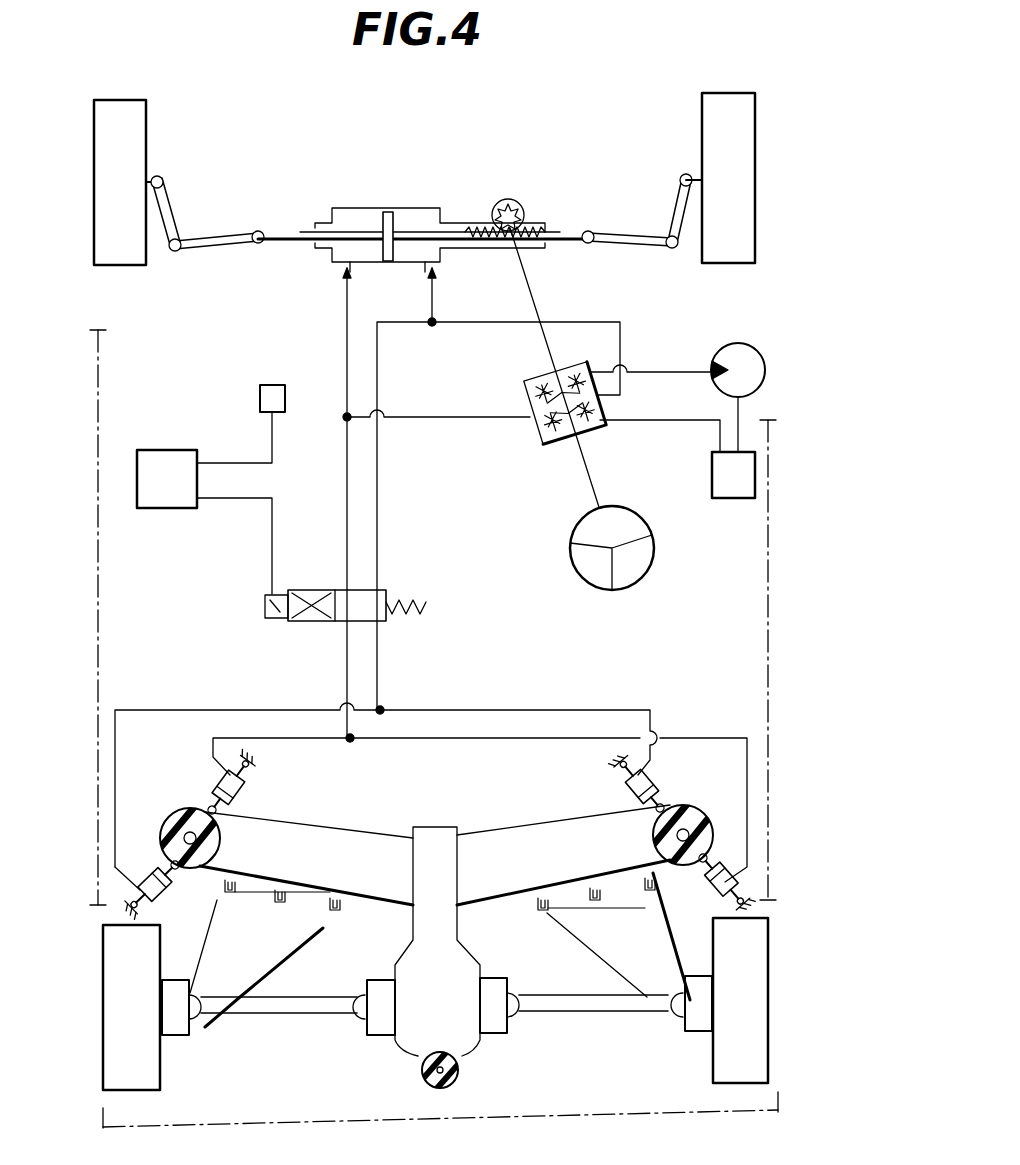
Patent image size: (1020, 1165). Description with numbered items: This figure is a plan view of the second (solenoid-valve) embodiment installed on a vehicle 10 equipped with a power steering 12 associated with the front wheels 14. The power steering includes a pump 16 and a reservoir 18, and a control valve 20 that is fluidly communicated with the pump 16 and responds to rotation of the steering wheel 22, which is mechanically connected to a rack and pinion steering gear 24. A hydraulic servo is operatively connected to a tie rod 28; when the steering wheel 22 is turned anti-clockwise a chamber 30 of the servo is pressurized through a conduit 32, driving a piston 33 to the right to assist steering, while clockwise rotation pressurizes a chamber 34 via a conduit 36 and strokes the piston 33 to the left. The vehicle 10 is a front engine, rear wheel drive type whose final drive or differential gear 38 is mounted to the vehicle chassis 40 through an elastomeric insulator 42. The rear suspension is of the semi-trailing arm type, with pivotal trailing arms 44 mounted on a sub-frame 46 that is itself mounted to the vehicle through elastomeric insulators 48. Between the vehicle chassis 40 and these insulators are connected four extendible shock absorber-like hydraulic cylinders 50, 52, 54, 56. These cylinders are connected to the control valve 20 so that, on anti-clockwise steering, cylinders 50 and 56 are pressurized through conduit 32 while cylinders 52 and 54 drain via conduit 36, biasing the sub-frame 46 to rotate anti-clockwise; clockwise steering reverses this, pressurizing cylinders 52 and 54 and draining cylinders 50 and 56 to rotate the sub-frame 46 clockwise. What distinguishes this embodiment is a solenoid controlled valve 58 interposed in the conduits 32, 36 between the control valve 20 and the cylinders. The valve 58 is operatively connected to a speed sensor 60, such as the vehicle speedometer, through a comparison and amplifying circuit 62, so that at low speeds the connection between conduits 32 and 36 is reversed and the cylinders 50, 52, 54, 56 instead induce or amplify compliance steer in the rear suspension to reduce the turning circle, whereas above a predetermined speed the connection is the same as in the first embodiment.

The vehicle 10 is at (98, 672).
The power steering 12 is at (372, 160).
The front wheels 14 is at (148, 136).
The pump 16 is at (714, 358).
The reservoir 18 is at (712, 488).
The control valve 20 is at (540, 436).
The steering wheel 22 is at (600, 590).
The rack and pinion steering gear 24 is at (495, 210).
The tie rod 28 is at (284, 230).
The chamber 30 is at (344, 215).
The conduit 32 is at (344, 534).
The piston 33 is at (386, 212).
The chamber 34 is at (412, 208).
The conduit 36 is at (434, 304).
The final drive or differential gear 38 is at (396, 1044).
The vehicle chassis 40 is at (248, 760).
The elastomeric insulator 42 is at (470, 1076).
The trailing arms 44 is at (290, 938).
The sub-frame 46 is at (330, 842).
The elastomeric insulators 48 is at (166, 816).
The hydraulic cylinder 50 is at (216, 772).
The hydraulic cylinder 52 is at (140, 864).
The hydraulic cylinder 54 is at (620, 786).
The hydraulic cylinder 56 is at (716, 888).
The solenoid controlled valve 58 is at (390, 618).
The speed sensor 60 is at (260, 398).
The comparison and amplifying circuit 62 is at (178, 510).